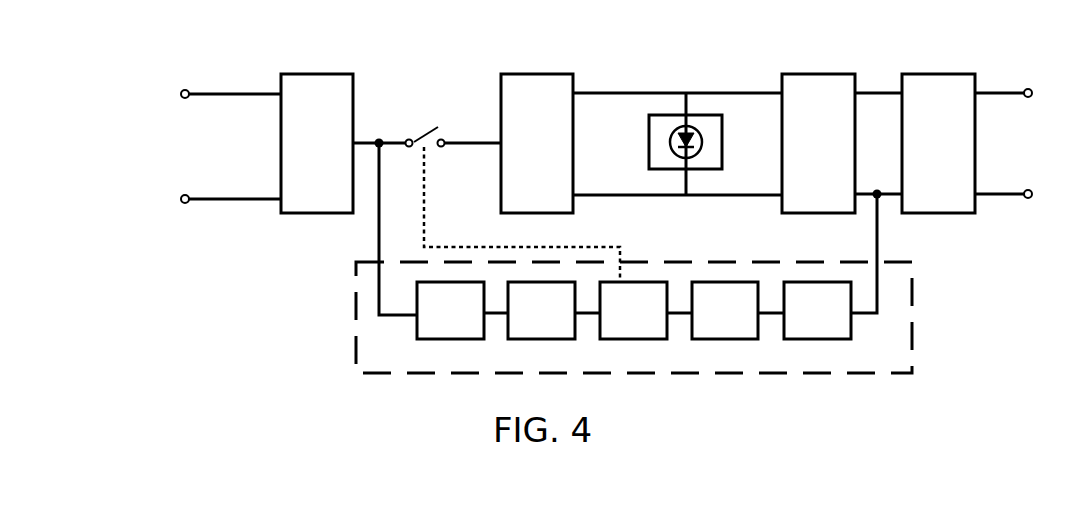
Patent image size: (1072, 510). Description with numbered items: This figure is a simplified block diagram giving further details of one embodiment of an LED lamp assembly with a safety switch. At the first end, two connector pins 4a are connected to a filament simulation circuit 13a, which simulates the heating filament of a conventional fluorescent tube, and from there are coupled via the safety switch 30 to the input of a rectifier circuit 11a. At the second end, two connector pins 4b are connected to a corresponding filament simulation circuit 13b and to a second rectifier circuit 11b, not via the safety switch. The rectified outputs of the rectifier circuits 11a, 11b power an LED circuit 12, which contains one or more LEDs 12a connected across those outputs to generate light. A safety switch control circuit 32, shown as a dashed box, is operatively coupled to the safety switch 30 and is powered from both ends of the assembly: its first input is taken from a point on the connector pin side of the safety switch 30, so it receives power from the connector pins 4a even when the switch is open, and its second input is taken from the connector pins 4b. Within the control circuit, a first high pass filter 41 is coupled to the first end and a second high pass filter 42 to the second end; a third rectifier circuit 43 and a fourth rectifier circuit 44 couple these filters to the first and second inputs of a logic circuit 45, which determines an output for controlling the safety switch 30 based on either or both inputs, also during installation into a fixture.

The connector pins 4a is at (228, 93).
The filament simulation circuit 13a is at (313, 70).
The safety switch 30 is at (420, 130).
The rectifier circuit 11a is at (532, 70).
The LED circuit 12 is at (649, 128).
The LED 12a is at (703, 137).
The rectifier circuit 11b is at (815, 70).
The filament simulation circuit 13b is at (933, 70).
The connector pins 4b is at (1012, 83).
The safety switch control circuit 32 is at (912, 297).
The first high pass filter 41 is at (436, 324).
The third rectifier circuit 43 is at (527, 324).
The logic circuit 45 is at (619, 324).
The fourth rectifier circuit 44 is at (711, 324).
The second high pass filter 42 is at (803, 324).